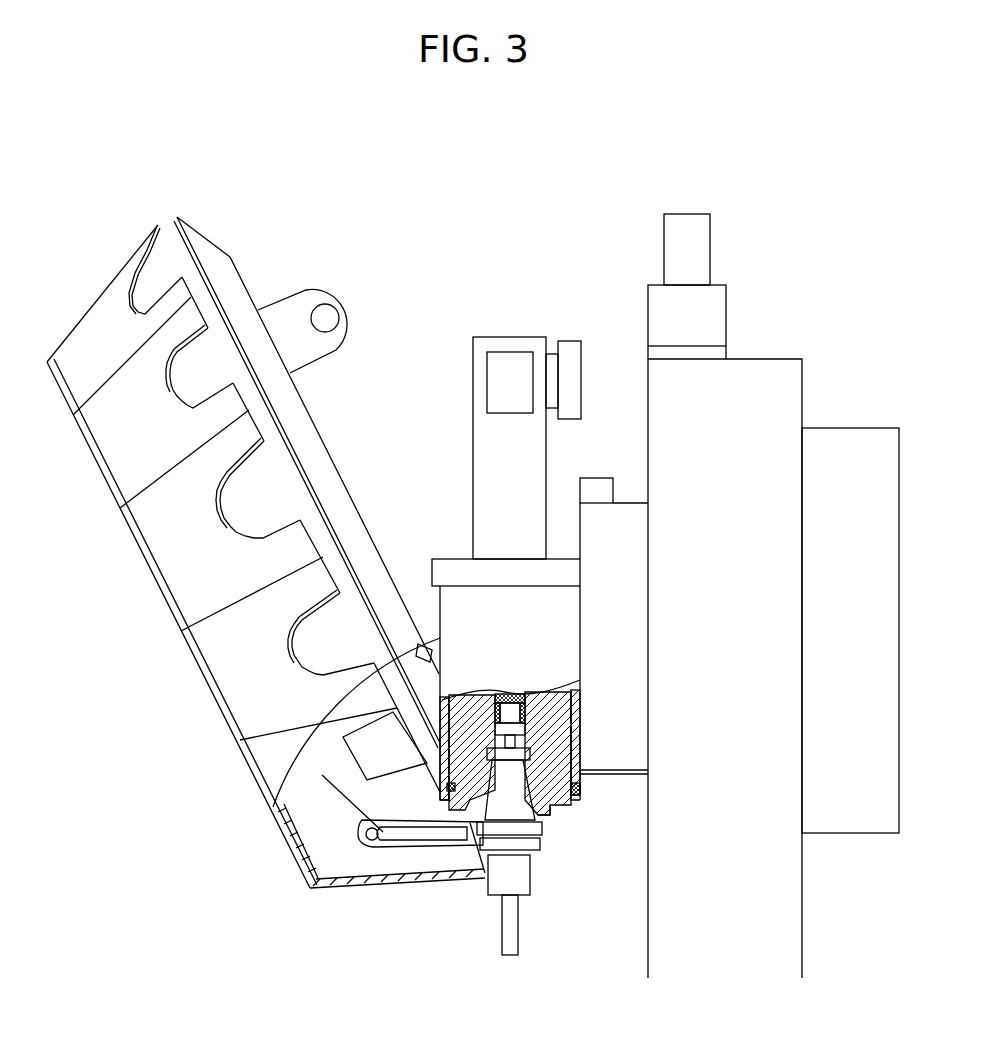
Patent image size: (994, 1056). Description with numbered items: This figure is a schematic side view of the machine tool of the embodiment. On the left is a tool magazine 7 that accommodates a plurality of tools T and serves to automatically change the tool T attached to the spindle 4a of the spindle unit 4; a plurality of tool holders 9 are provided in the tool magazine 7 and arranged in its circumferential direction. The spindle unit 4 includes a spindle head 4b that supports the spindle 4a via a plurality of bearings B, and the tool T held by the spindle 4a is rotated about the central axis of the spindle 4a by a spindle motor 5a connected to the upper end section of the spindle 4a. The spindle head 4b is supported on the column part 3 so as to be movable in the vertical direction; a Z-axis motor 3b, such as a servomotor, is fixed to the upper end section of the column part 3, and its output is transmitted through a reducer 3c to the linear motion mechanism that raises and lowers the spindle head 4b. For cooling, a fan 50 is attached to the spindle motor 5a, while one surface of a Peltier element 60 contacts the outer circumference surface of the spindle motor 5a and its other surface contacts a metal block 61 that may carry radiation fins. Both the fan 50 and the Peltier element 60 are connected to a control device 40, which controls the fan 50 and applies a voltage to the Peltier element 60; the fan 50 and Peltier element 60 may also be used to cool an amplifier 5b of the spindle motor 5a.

The column part 3 is at (805, 880).
The Z-axis motor 3b is at (712, 235).
The reducer 3c is at (727, 312).
The spindle unit 4 is at (434, 548).
The spindle 4a is at (552, 814).
The spindle head 4b is at (581, 788).
The spindle motor 5a is at (497, 337).
The amplifier 5b is at (613, 490).
The tool magazine 7 is at (204, 238).
The tool holder 9 is at (380, 850).
The control device 40 is at (862, 428).
The fan 50 is at (487, 372).
The Peltier element 60 is at (552, 354).
The metal block 61 is at (572, 341).
The bearing B is at (581, 774).
The tool T is at (502, 937).